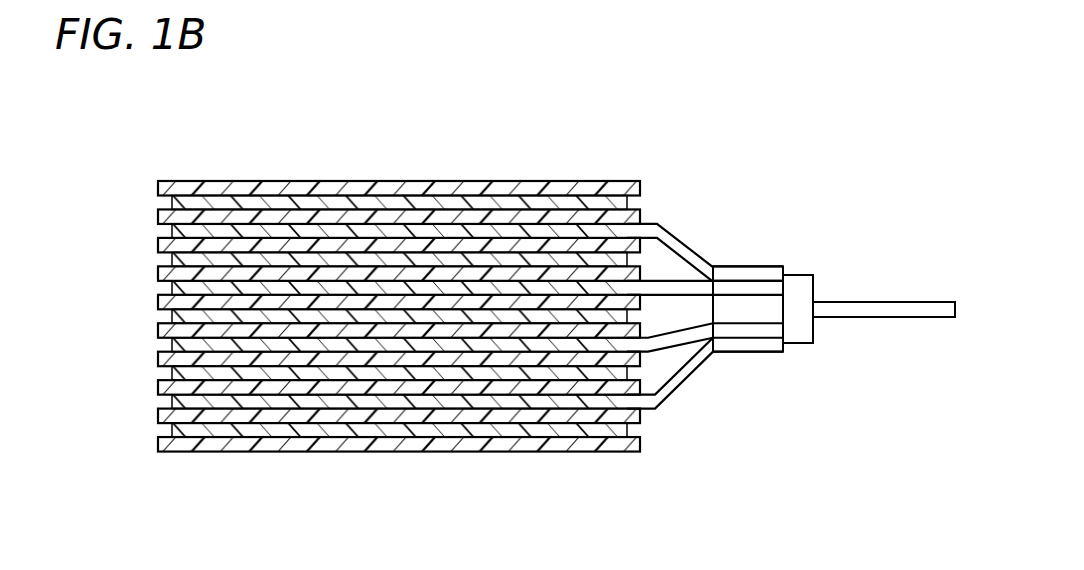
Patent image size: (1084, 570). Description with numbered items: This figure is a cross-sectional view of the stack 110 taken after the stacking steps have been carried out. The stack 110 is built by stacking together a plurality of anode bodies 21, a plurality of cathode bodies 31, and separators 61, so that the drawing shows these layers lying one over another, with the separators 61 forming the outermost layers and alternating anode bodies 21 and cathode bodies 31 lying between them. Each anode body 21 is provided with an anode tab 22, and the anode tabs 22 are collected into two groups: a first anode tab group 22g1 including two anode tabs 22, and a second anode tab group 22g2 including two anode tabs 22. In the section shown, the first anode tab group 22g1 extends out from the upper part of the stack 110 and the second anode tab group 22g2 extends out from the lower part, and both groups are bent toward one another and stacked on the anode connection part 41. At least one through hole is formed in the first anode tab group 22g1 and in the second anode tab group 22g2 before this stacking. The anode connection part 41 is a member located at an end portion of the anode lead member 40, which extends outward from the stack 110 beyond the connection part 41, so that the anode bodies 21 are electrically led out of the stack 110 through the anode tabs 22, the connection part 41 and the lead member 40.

The stack 110 is at (337, 150).
The separator 61 is at (210, 190).
The cathode body 31 is at (168, 203).
The anode body 21 is at (168, 232).
The anode tab 22 is at (705, 294).
The first anode tab group 22g1 is at (687, 287).
The second anode tab group 22g2 is at (687, 338).
The anode connection part 41 is at (738, 310).
The anode lead member 40 is at (875, 308).